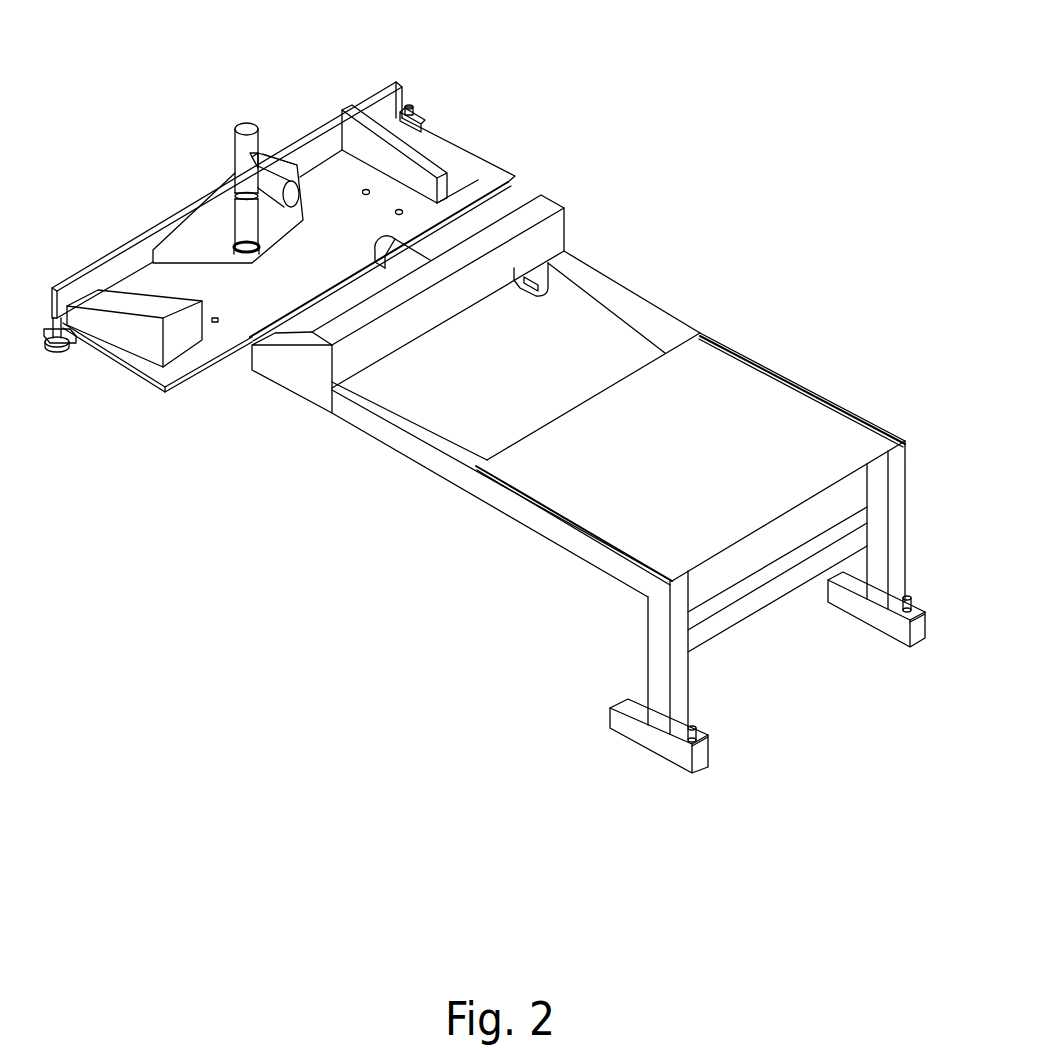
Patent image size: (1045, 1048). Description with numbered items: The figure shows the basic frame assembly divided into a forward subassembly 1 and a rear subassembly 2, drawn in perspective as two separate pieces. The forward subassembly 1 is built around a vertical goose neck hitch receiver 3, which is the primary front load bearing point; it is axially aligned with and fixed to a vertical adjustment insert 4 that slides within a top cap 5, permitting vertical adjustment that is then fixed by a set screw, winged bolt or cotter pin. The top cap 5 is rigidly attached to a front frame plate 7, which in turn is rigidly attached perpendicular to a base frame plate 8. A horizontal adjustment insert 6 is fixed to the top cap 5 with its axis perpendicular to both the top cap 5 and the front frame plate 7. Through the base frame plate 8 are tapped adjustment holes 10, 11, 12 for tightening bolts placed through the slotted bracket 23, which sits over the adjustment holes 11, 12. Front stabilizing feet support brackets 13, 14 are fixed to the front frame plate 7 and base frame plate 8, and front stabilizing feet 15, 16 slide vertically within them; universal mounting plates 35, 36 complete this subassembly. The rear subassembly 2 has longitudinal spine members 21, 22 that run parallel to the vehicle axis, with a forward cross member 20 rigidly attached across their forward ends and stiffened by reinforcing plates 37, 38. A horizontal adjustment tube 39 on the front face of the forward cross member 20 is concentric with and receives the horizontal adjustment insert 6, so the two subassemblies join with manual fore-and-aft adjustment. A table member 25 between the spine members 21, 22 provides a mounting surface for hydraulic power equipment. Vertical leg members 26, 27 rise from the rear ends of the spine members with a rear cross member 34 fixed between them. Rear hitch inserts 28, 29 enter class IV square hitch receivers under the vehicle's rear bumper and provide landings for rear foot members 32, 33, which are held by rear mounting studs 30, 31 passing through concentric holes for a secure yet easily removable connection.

The forward subassembly 1 is at (331, 86).
The rear subassembly 2 is at (698, 262).
The vertical goose neck hitch receiver 3 is at (243, 225).
The vertical adjustment insert 4 is at (238, 197).
The top cap 5 is at (247, 140).
The horizontal adjustment insert 6 is at (262, 172).
The front frame plate 7 is at (177, 207).
The base frame plate 8 is at (270, 283).
The adjustment hole 10 is at (219, 318).
The adjustment hole 11 is at (360, 193).
The adjustment hole 12 is at (394, 212).
The front stabilizing feet support bracket 13 is at (70, 341).
The front stabilizing feet support bracket 14 is at (420, 126).
The front stabilizing foot 15 is at (56, 352).
The front stabilizing foot 16 is at (412, 106).
The forward cross member 20 is at (536, 208).
The longitudinal spine member 21 is at (430, 430).
The longitudinal spine member 22 is at (607, 284).
The slotted bracket 23 is at (540, 278).
The table member 25 is at (709, 375).
The vertical leg member 26 is at (662, 620).
The vertical leg member 27 is at (898, 487).
The rear hitch insert 28 is at (663, 752).
The rear hitch insert 29 is at (885, 623).
The rear mounting stud 30 is at (697, 729).
The rear mounting stud 31 is at (904, 618).
The rear foot member 32 is at (710, 738).
The rear foot member 33 is at (918, 650).
The rear cross member 34 is at (768, 597).
The universal mounting plate 35 is at (148, 303).
The universal mounting plate 36 is at (413, 139).
The reinforcing plate 37 is at (295, 350).
The reinforcing plate 38 is at (505, 201).
The horizontal adjustment tube 39 is at (402, 253).